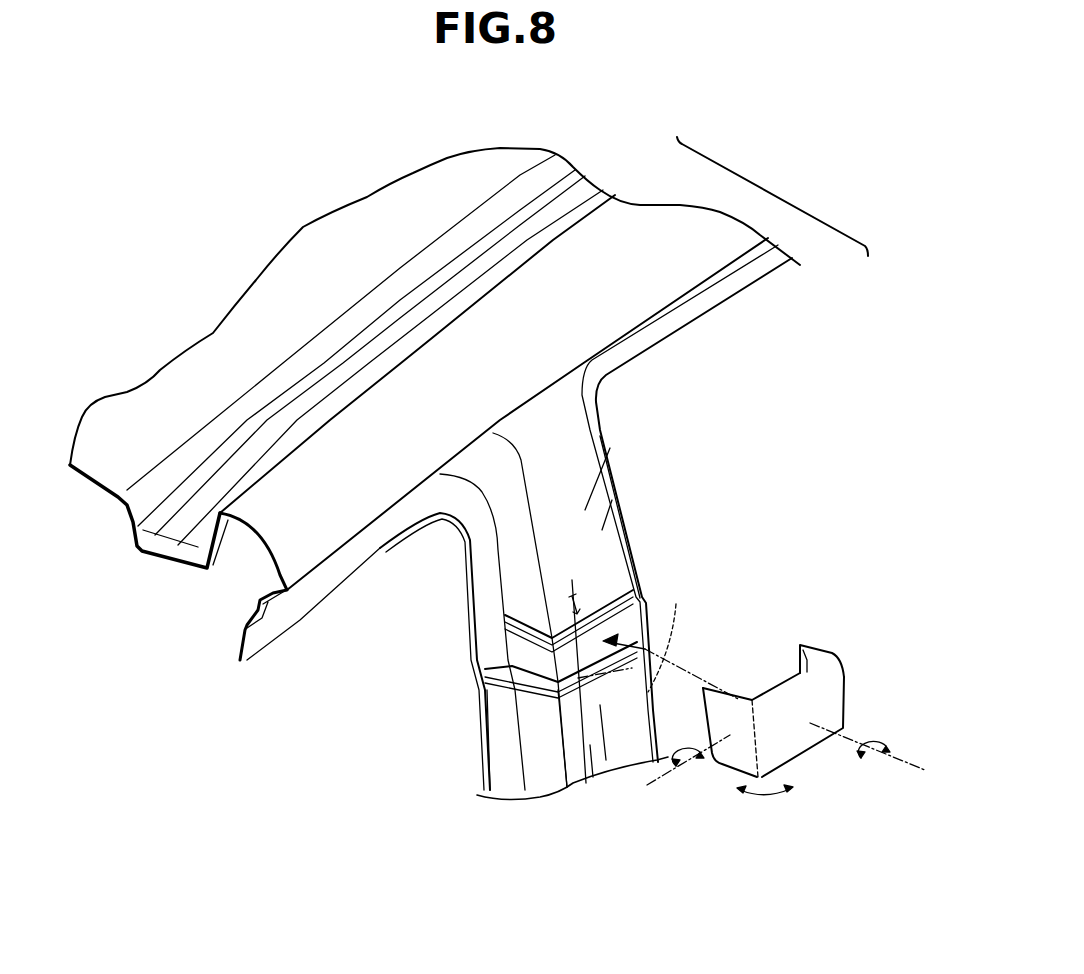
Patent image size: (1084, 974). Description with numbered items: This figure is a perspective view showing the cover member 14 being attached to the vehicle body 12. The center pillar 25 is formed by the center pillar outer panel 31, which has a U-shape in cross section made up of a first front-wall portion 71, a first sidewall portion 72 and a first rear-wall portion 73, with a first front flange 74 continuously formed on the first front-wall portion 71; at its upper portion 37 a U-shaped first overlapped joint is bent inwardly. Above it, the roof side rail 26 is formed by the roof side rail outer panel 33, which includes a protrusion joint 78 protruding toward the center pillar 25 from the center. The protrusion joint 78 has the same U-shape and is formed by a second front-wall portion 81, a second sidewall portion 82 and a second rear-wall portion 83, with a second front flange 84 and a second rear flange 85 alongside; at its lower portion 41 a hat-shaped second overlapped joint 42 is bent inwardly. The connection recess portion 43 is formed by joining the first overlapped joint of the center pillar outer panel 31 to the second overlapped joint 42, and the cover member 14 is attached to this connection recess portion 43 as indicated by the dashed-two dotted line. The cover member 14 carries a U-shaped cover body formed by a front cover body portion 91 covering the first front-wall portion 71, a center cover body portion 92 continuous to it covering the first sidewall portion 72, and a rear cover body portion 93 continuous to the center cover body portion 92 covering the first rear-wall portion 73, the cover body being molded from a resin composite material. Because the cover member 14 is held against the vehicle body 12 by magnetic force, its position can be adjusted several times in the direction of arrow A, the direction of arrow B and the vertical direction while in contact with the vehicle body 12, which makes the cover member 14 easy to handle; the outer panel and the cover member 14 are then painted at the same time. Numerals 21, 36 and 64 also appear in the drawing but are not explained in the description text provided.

The vehicle body 12 is at (165, 218).
The roof panel 21 is at (303, 221).
The roof side rail 26 is at (786, 190).
The roof side rail outer panel 33 is at (603, 452).
The second rear-wall portion 83 is at (612, 453).
The second sidewall portion 82 is at (590, 513).
The lower portion (end portion) 41 is at (602, 530).
The cover member 14 is at (781, 657).
The second rear flange 85 is at (640, 562).
The upper portion (end portion) 37 is at (670, 634).
The first rear-wall portion 73 is at (663, 660).
The rear cover body portion 93 is at (807, 645).
The protrusion joint 78 is at (493, 540).
The second front-wall portion 81 is at (514, 557).
The second front flange 84 is at (494, 602).
The second overlapped joint (second bent portion) 42 is at (520, 680).
The lower flange 36 is at (527, 700).
The center pillar 25 is at (487, 758).
The first front flange 74 is at (511, 779).
The first front-wall portion 71 is at (547, 765).
The connection recess portion 43 is at (558, 722).
The first sidewall portion 72 is at (607, 752).
The center pillar outer panel 31 is at (593, 777).
The front cover body portion 91 is at (730, 755).
The center cover body portion 92 is at (790, 740).
The gap 64 is at (767, 797).